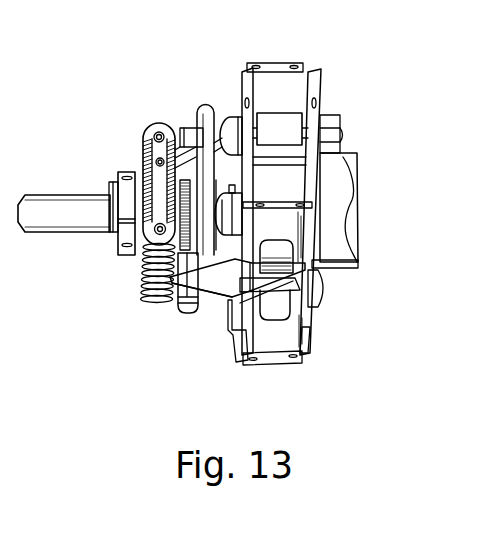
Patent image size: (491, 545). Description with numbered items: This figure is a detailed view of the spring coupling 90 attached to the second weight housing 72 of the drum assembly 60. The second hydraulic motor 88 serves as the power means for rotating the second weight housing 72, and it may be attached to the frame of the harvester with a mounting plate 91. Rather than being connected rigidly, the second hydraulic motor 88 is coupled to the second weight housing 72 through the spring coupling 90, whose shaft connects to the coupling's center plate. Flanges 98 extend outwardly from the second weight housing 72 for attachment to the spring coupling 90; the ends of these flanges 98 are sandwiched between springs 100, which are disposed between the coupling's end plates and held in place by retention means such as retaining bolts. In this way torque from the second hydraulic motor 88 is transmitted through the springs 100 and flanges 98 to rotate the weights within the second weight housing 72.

The drum assembly 60 is at (358, 136).
The second weight housing 72 is at (334, 84).
The second hydraulic motor 88 is at (62, 236).
The spring coupling 90 is at (145, 78).
The mounting plate 91 is at (128, 171).
The flanges 98 is at (192, 315).
The springs 100 is at (143, 292).